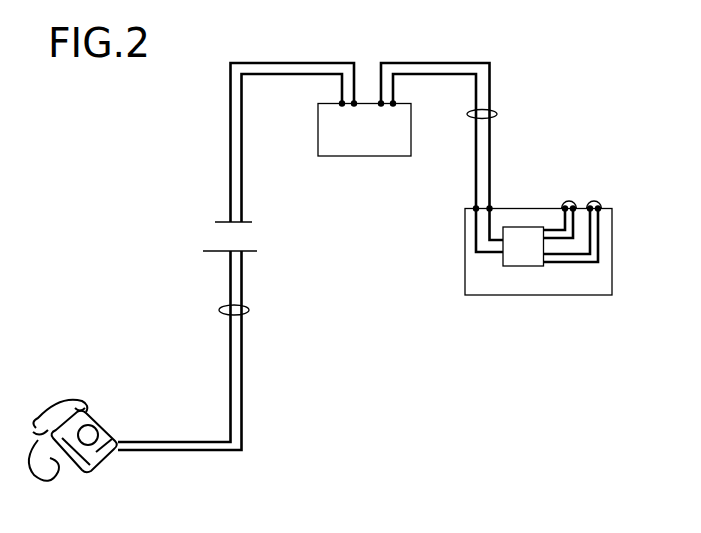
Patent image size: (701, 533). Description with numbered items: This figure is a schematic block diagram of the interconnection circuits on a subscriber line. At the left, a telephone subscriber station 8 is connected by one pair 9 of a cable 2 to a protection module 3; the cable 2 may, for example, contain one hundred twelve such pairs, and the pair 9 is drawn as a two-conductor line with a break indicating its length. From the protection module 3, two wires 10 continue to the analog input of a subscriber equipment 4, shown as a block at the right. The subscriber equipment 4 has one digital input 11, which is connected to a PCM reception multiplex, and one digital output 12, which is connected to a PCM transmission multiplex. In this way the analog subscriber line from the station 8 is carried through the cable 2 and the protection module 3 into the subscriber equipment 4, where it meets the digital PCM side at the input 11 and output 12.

The cable 2 is at (258, 314).
The protection module 3 is at (375, 157).
The subscriber equipment 4 is at (546, 295).
The telephone subscriber station 8 is at (90, 468).
The pair 9 is at (249, 310).
The two wires 10 is at (497, 115).
The digital input 11 is at (568, 200).
The digital output 12 is at (594, 200).